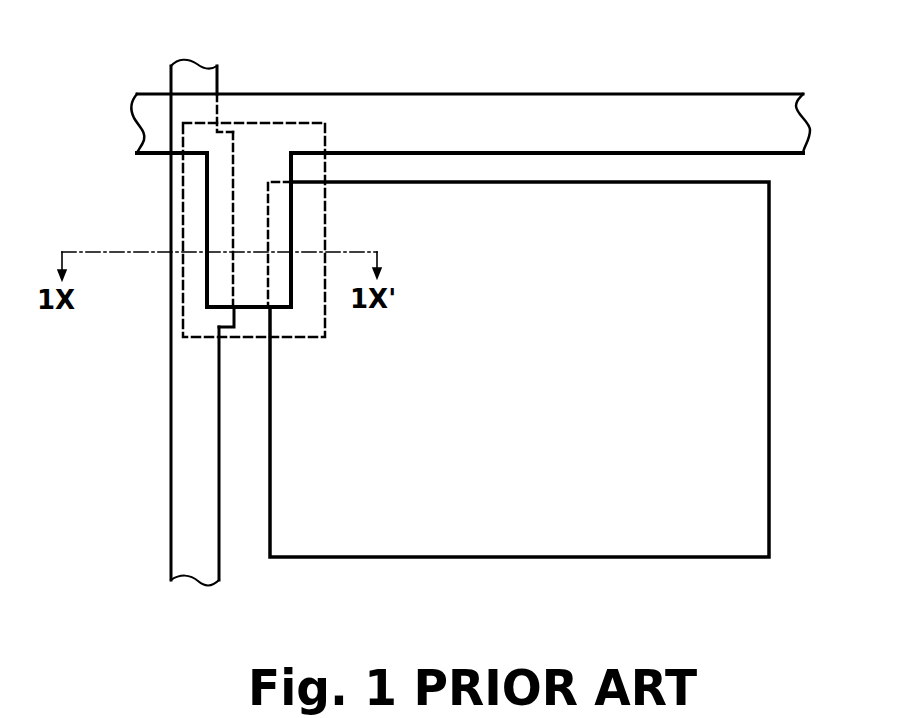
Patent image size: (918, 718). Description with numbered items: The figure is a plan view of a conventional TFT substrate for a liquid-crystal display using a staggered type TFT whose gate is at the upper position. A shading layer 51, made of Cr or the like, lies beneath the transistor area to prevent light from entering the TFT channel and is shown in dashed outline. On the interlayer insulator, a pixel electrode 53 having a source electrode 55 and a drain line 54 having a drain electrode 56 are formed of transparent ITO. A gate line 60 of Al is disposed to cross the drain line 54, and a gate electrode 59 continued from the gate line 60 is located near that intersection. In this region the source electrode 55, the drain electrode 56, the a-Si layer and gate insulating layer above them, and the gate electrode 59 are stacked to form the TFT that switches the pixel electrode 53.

The shading layer 51 is at (253, 122).
The pixel electrode 53 is at (470, 200).
The drain line 54 is at (200, 402).
The source electrode 55 is at (275, 280).
The drain electrode 56 is at (218, 193).
The gate electrode 59 is at (238, 235).
The gate line 60 is at (601, 124).